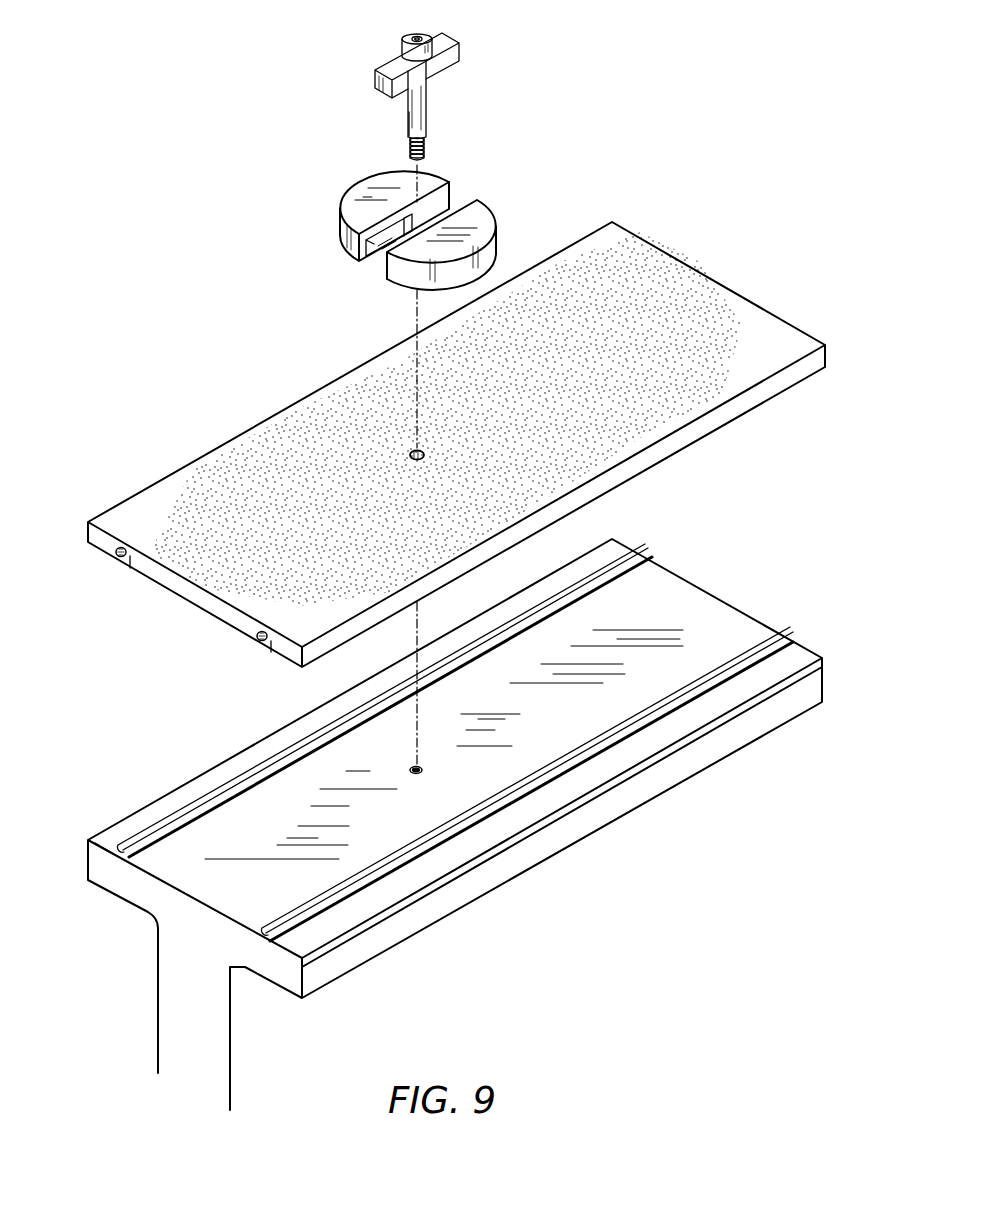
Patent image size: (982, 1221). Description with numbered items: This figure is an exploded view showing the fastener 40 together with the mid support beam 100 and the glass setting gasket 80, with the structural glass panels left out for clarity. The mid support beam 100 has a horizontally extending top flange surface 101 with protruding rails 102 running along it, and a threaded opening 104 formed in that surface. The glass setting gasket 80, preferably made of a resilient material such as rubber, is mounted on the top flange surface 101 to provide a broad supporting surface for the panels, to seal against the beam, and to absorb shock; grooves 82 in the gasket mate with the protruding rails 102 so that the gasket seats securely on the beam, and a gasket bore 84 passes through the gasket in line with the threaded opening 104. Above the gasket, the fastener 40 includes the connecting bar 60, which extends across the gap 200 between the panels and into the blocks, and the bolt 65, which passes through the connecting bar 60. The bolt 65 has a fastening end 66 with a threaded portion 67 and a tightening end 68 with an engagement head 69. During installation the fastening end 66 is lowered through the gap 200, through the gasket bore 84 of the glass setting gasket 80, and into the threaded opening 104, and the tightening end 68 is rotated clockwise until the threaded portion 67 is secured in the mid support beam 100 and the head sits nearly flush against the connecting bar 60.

The fastener 40 is at (278, 110).
The connecting bar 60 is at (458, 33).
The bolt 65 is at (428, 98).
The fastening end 66 is at (428, 126).
The threaded portion 67 is at (425, 150).
The tightening end 68 is at (403, 50).
The engagement head 69 is at (412, 36).
The gap 200 is at (452, 181).
The glass setting gasket 80 is at (87, 531).
The grooves 82 is at (120, 560).
The gasket bore 84 is at (414, 447).
The mid support beam 100 is at (158, 985).
The top flange surface 101 is at (115, 840).
The protruding rails 102 is at (158, 820).
The threaded opening 104 is at (418, 774).